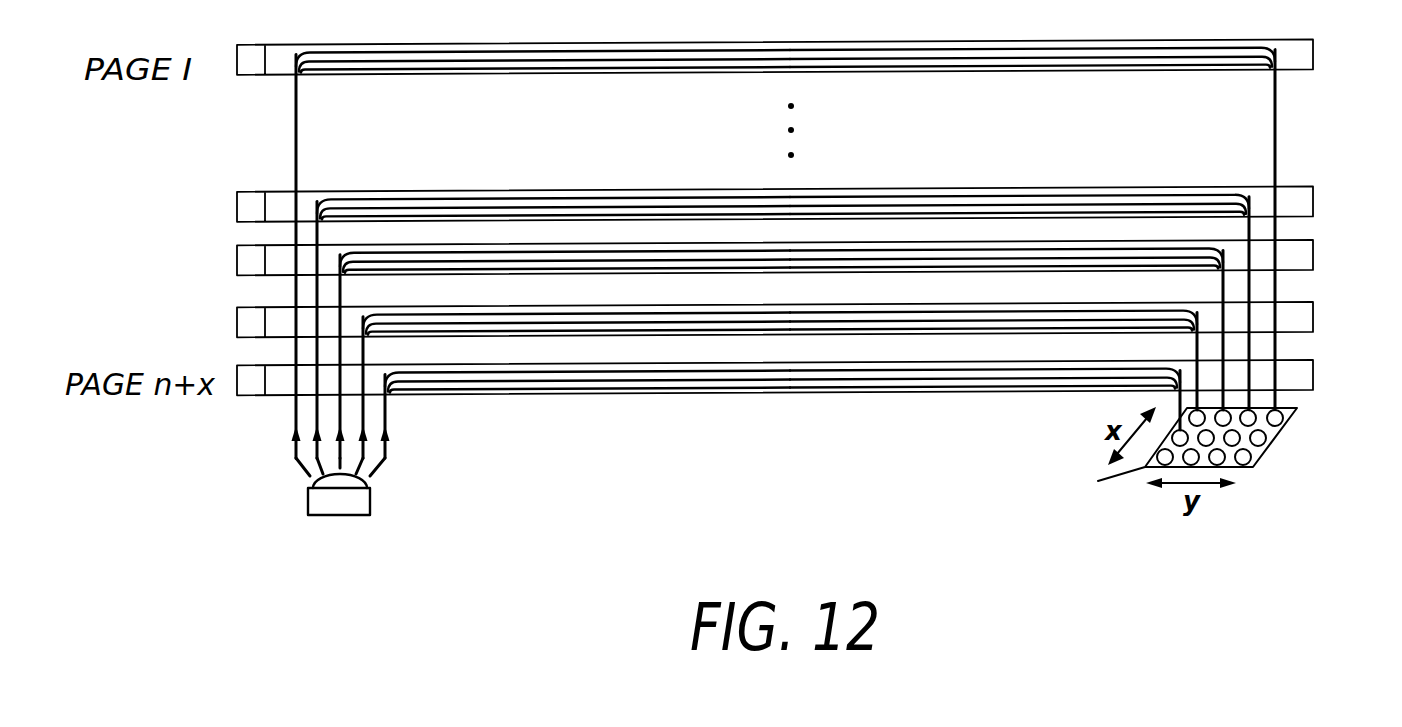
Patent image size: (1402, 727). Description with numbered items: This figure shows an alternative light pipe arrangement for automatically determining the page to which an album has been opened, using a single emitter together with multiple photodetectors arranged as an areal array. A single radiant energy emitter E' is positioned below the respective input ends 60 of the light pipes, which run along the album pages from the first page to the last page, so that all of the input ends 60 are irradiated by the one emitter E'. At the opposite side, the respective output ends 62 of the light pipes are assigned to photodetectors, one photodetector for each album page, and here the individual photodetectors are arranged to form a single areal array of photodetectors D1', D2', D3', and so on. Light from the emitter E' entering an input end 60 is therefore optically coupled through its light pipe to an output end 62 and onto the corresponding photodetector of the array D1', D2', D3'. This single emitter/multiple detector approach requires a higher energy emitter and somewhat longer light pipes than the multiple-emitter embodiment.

The input end 60 is at (300, 78).
The output end 62 is at (1283, 78).
The radiant energy emitter E' is at (300, 498).
The photodetector D1' is at (1293, 425).
The photodetector D2' is at (1287, 456).
The photodetector D3' is at (1277, 495).